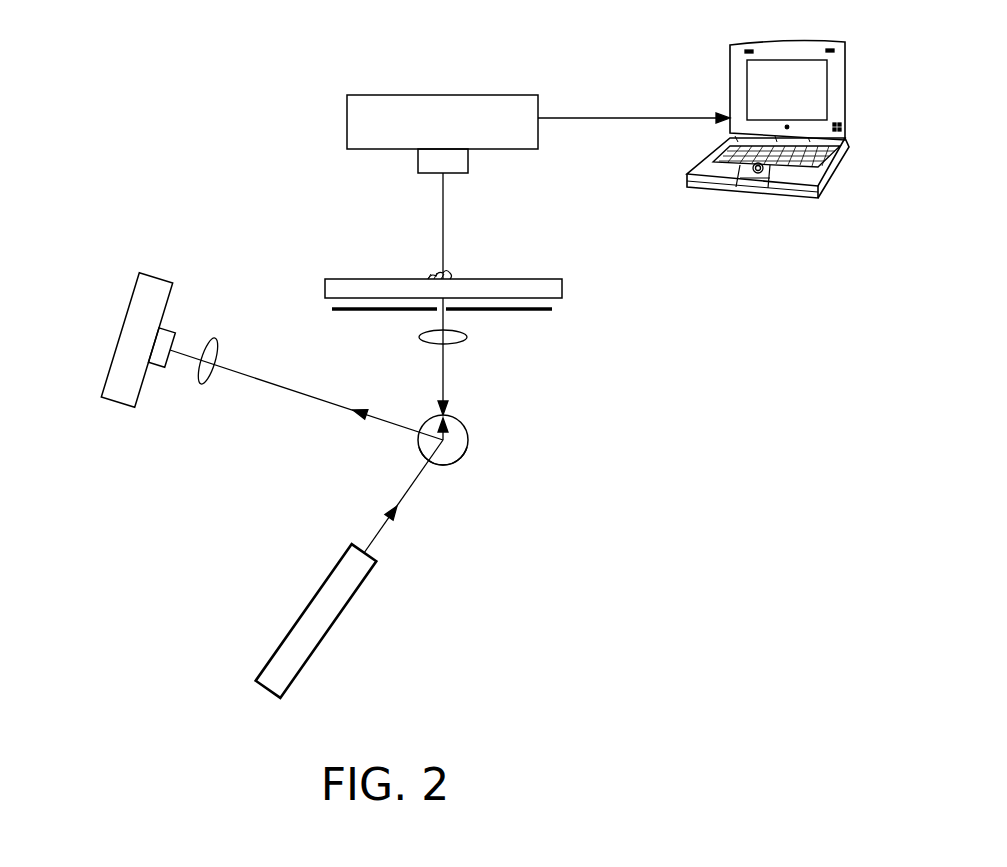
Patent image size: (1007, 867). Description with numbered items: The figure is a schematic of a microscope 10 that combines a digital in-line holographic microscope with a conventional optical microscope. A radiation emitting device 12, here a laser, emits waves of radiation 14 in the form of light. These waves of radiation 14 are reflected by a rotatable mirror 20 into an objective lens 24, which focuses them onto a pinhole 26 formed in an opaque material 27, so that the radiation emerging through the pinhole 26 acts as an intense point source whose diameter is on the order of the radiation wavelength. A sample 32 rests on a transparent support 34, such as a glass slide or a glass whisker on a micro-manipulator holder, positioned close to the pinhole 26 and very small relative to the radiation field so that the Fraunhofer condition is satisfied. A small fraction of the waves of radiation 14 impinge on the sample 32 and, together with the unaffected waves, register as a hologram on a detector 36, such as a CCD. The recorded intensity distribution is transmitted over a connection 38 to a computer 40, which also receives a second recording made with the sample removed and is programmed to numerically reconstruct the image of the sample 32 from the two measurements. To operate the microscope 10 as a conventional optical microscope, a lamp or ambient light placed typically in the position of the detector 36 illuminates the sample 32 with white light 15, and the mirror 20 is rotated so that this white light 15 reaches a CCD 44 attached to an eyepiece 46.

The microscope 10 is at (160, 123).
The radiation emitting device 12 is at (352, 603).
The waves of radiation 14 is at (386, 524).
The white light 15 is at (303, 401).
The rotatable mirror 20 is at (468, 442).
The objective lens 24 is at (419, 337).
The pinhole 26 is at (427, 318).
The opaque material 27 is at (545, 314).
The sample 32 is at (432, 275).
The transparent support 34 is at (562, 286).
The detector 36 is at (347, 116).
The connection 38 is at (608, 119).
The computer 40 is at (767, 194).
The CCD 44 is at (104, 398).
The eyepiece 46 is at (201, 386).